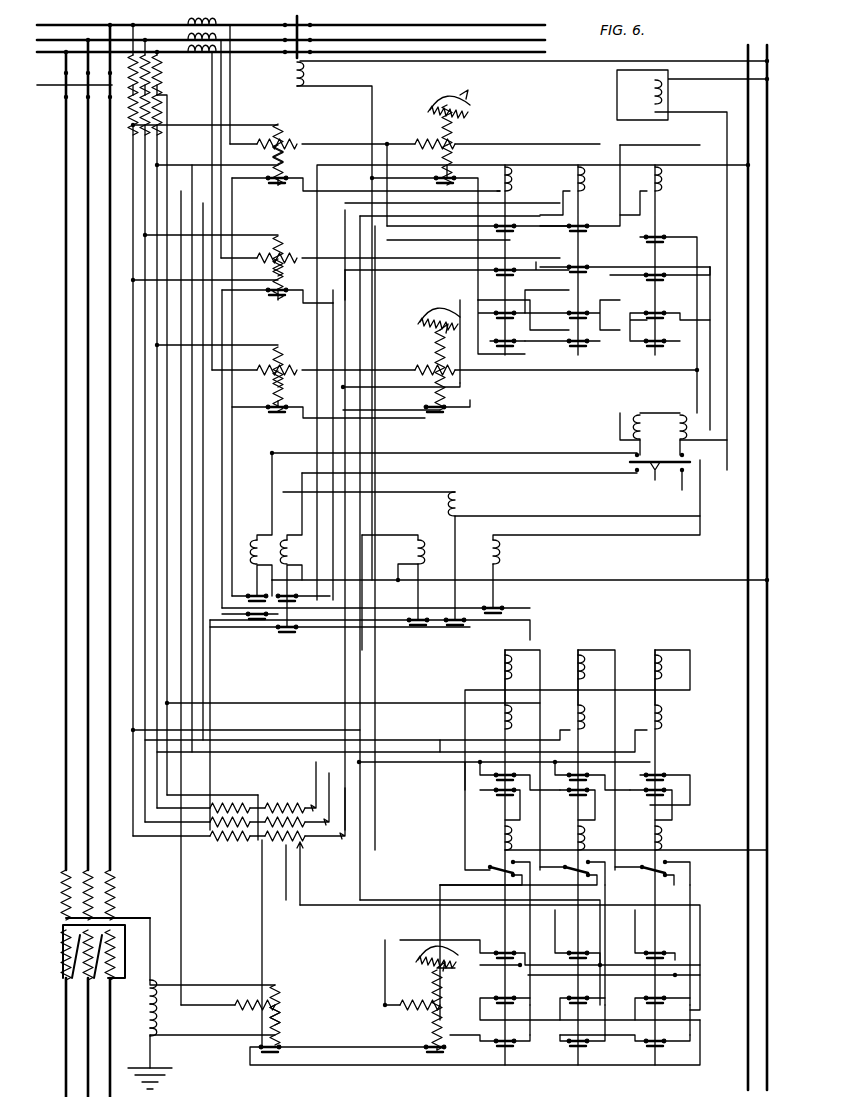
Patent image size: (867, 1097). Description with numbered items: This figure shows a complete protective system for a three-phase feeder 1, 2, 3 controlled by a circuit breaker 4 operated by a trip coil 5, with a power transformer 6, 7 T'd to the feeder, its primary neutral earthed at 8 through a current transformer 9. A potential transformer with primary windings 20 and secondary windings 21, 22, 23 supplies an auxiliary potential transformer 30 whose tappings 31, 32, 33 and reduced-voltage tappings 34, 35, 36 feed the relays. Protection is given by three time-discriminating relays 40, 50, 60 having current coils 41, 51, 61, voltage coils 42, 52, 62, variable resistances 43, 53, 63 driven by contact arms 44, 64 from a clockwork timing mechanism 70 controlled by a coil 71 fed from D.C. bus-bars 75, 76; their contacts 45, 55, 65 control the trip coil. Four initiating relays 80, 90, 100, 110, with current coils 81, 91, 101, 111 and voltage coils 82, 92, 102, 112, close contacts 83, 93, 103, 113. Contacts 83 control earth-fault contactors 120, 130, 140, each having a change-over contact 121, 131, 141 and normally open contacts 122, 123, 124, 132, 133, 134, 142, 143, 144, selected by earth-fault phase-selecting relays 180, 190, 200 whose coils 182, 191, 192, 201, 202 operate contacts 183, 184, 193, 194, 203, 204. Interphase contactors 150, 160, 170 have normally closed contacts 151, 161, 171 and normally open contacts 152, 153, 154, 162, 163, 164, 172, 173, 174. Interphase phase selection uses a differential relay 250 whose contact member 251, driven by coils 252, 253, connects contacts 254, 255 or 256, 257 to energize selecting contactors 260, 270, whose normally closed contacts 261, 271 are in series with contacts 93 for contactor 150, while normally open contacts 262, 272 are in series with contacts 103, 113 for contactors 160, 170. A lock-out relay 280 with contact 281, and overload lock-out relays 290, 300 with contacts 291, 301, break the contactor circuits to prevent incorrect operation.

The protected feeder phase 1 is at (402, 24).
The protected feeder phase 2 is at (435, 40).
The protected feeder phase 3 is at (474, 52).
The circuit breaker 4 is at (297, 29).
The trip coil 5 is at (292, 73).
The power transformer primary 6 is at (112, 894).
The power transformer secondary 7 is at (63, 952).
The earth connection 8 is at (150, 1060).
The current transformer 9 is at (146, 1010).
The potential transformer primary windings 20 is at (158, 72).
The potential transformer secondary winding 21 is at (131, 124).
The potential transformer secondary winding 22 is at (156, 98).
The potential transformer secondary winding 23 is at (160, 112).
The auxiliary potential transformer 30 is at (259, 804).
The tapping 31 is at (316, 762).
The tapping 32 is at (329, 777).
The tapping 33 is at (345, 796).
The reduced voltage tapping 34 is at (262, 860).
The reduced voltage tapping 35 is at (300, 860).
The reduced voltage tapping 36 is at (300, 884).
The earth fault time-discriminating relay 40 is at (416, 976).
The current coil 41 is at (420, 998).
The voltage coil 42 is at (441, 1015).
The variable resistance 43 is at (424, 956).
The contact arm 44 is at (444, 972).
The contacts 45 is at (436, 1055).
The time-discriminating relay 50 is at (418, 127).
The current coil 51 is at (408, 134).
The voltage coil 52 is at (450, 130).
The variable resistance 53 is at (444, 90).
The contacts 55 is at (446, 176).
The time-discriminating relay 60 is at (420, 352).
The current coil 61 is at (425, 380).
The voltage coil 62 is at (444, 355).
The variable resistance 63 is at (432, 315).
The contact arm 64 is at (445, 335).
The contacts 65 is at (436, 414).
The timing mechanism 70 is at (616, 88).
The control coil 71 is at (668, 95).
The D. C. control bus-bar 75 is at (746, 48).
The D. C. control bus-bar 76 is at (769, 48).
The earth fault initiating relay 80 is at (279, 1000).
The current coil 81 is at (279, 1008).
The voltage coil 82 is at (272, 1020).
The contacts 83 is at (271, 1055).
The initiating relay 90 is at (279, 143).
The current coil 91 is at (279, 160).
The voltage coil 92 is at (277, 124).
The contacts 93 is at (278, 186).
The initiating relay 100 is at (279, 257).
The current coil 101 is at (279, 272).
The voltage coil 102 is at (277, 237).
The contacts 103 is at (278, 298).
The initiating relay 110 is at (279, 369).
The current coil 111 is at (279, 382).
The voltage coil 112 is at (277, 348).
The contacts 113 is at (278, 414).
The D. C. contactor 120 is at (508, 836).
The change-over contact 121 is at (498, 864).
The normally open contact 122 is at (508, 950).
The normally open contact 123 is at (498, 994).
The normally open contact 124 is at (506, 1050).
The D. C. contactor 130 is at (582, 836).
The change-over contact 131 is at (570, 870).
The normally open contact 132 is at (582, 950).
The normally open contact 133 is at (571, 994).
The normally open contact 134 is at (579, 1050).
The D. C. contactor 140 is at (659, 836).
The change-over contact 141 is at (645, 870).
The normally open contact 142 is at (662, 950).
The normally open contact 143 is at (648, 994).
The normally open contact 144 is at (656, 1050).
The auxiliary D. C. contactor 150 is at (503, 170).
The normally closed contact 151 is at (510, 222).
The normally open contact 152 is at (510, 266).
The normally open contact 153 is at (499, 316).
The normally open contact 154 is at (504, 346).
The auxiliary D. C. contactor 160 is at (580, 180).
The normally closed contact 161 is at (582, 222).
The normally open contact 162 is at (582, 266).
The normally open contact 163 is at (582, 310).
The normally open contact 164 is at (578, 347).
The auxiliary D. C. contactor 170 is at (659, 178).
The normally closed contact 171 is at (660, 234).
The normally open contact 172 is at (660, 272).
The normally open contact 173 is at (660, 310).
The normally open contact 174 is at (657, 347).
The earth-fault phase-selecting relay 180 is at (486, 677).
The current coil 182 is at (508, 668).
The contact 183 is at (496, 773).
The contact 184 is at (496, 787).
The earth-fault phase-selecting relay 190 is at (573, 689).
The voltage coil 191 is at (583, 720).
The current coil 192 is at (582, 665).
The contact 193 is at (582, 772).
The contact 194 is at (580, 797).
The earth-fault phase-selecting relay 200 is at (650, 689).
The voltage coil 201 is at (660, 720).
The current coil 202 is at (660, 665).
The contact 203 is at (660, 772).
The contact 204 is at (657, 797).
The phase-selecting relay 250 is at (612, 440).
The contact-making system 251 is at (653, 478).
The operating coil 252 is at (650, 412).
The operating coil 253 is at (683, 428).
The contact 254 is at (636, 457).
The contact 255 is at (682, 478).
The contact 256 is at (636, 475).
The contact 257 is at (678, 457).
The selecting contactor 260 is at (252, 541).
The normally closed contact 261 is at (245, 606).
The normally open contact 262 is at (256, 622).
The selecting contactor 270 is at (286, 541).
The normally closed contact 271 is at (284, 604).
The normally open contact 272 is at (288, 634).
The lock-out relay 280 is at (416, 552).
The normally closed contact 281 is at (416, 626).
The lock-out relay 290 is at (450, 496).
The contact 291 is at (452, 627).
The lock-out relay 300 is at (497, 552).
The contact 301 is at (495, 615).